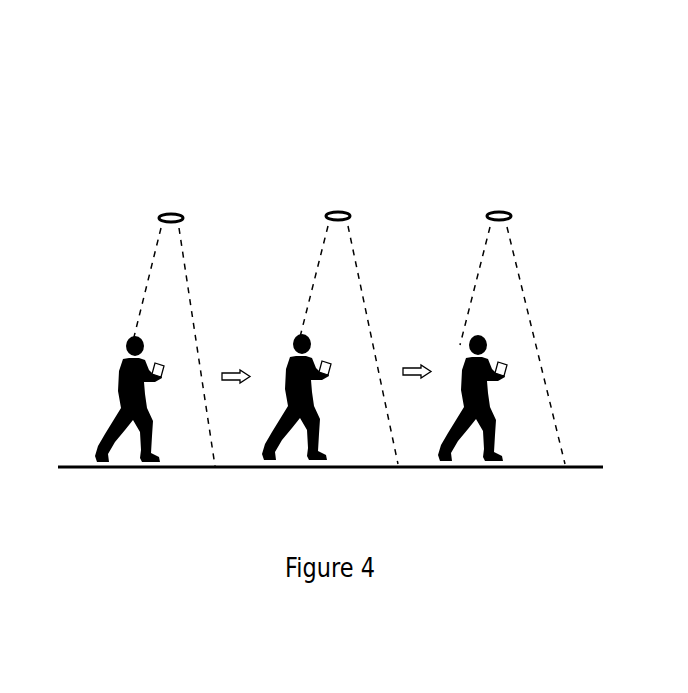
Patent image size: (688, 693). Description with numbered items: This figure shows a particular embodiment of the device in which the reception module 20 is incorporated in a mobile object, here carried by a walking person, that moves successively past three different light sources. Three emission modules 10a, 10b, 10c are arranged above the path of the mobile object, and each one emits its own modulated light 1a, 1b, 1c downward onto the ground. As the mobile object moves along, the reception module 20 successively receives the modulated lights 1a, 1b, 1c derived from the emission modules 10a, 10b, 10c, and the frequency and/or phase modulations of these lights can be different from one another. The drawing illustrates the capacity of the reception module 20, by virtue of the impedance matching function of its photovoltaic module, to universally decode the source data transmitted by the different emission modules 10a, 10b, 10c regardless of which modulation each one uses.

The emission module 10a is at (176, 208).
The emission module 10b is at (343, 210).
The emission module 10c is at (505, 210).
The modulated light 1a is at (163, 275).
The modulated light 1b is at (343, 270).
The modulated light 1c is at (496, 272).
The reception module 20 is at (164, 355).